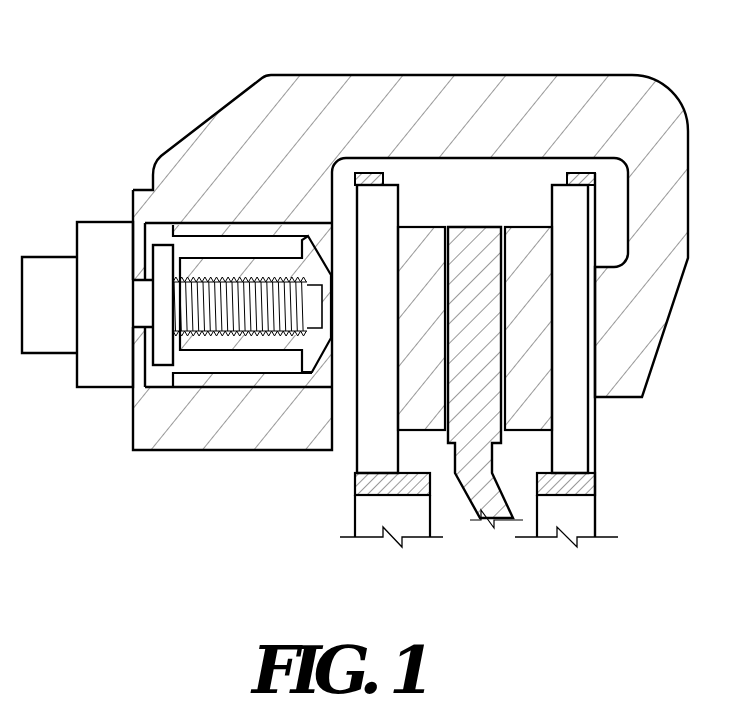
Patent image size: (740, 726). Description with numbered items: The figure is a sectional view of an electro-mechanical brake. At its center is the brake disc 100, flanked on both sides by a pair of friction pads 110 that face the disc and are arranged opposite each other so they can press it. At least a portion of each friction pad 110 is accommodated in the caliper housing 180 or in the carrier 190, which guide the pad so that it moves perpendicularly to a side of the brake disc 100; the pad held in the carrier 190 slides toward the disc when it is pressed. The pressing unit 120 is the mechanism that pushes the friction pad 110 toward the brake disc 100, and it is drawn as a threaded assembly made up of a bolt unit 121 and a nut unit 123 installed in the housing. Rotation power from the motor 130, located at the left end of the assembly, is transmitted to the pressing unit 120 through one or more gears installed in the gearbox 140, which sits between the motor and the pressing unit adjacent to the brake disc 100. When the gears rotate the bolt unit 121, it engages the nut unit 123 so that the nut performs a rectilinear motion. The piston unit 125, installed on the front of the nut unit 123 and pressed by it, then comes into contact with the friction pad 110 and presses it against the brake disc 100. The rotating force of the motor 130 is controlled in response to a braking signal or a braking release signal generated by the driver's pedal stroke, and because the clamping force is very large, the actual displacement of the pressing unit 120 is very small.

The brake disc 100 is at (455, 446).
The friction pad 110 is at (403, 423).
The pressing unit 120 is at (287, 502).
The bolt unit 121 is at (233, 325).
The nut unit 123 is at (305, 362).
The piston unit 125 is at (188, 380).
The motor 130 is at (45, 260).
The gearbox 140 is at (110, 228).
The caliper housing 180 is at (482, 77).
The carrier 190 is at (352, 493).